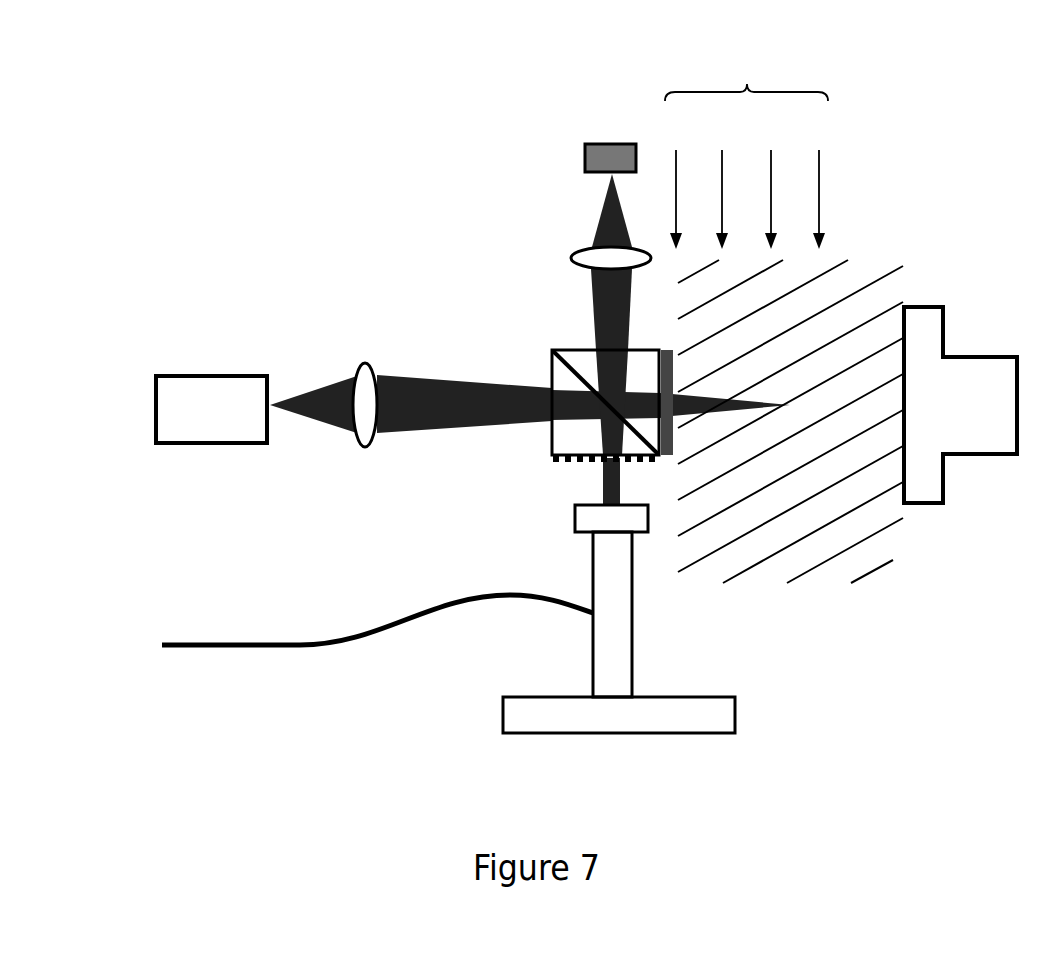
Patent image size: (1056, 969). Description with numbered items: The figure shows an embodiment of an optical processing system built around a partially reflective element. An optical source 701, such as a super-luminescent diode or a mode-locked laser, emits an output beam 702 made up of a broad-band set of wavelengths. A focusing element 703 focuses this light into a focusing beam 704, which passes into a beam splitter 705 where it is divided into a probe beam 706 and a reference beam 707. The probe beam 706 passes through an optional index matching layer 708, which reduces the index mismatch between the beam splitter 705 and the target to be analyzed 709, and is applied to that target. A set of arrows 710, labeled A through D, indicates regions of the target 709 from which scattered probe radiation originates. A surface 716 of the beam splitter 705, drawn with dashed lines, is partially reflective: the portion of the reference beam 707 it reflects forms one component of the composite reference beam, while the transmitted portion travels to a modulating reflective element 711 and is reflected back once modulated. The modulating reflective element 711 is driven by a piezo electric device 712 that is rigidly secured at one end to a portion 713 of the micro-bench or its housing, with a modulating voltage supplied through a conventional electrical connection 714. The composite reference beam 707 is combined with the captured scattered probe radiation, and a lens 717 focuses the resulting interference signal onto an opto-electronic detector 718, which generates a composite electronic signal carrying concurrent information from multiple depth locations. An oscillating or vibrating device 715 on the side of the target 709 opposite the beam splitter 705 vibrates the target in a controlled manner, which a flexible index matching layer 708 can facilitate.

The optical source 701 is at (213, 372).
The output beam 702 is at (322, 434).
The focusing element 703 is at (360, 347).
The focusing beam 704 is at (465, 375).
The beam splitter 705 is at (572, 347).
The probe beam 706 is at (735, 415).
The reference beam 707 is at (595, 430).
The index matching layer 708 is at (671, 458).
The target to be analyzed 709 is at (898, 568).
The set of arrows 710 is at (747, 80).
The modulating reflective element 711 is at (575, 508).
The piezo electric device 712 is at (588, 655).
The portion of the micro-bench or its housing 713 is at (695, 736).
The electrical connection 714 is at (207, 637).
The oscillating or vibrating device 715 is at (975, 350).
The partially reflective surface 716 is at (555, 466).
The lens 717 is at (572, 249).
The opto-electronic detector 718 is at (583, 143).